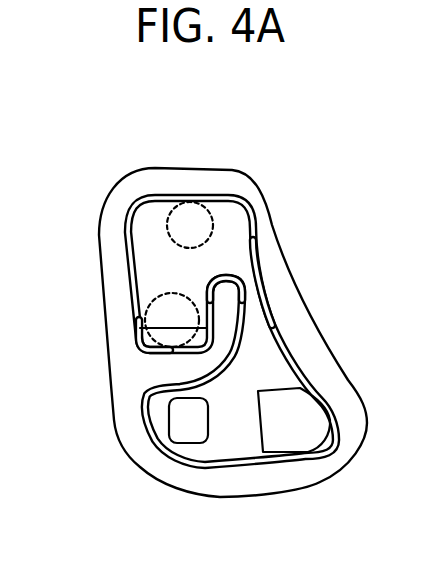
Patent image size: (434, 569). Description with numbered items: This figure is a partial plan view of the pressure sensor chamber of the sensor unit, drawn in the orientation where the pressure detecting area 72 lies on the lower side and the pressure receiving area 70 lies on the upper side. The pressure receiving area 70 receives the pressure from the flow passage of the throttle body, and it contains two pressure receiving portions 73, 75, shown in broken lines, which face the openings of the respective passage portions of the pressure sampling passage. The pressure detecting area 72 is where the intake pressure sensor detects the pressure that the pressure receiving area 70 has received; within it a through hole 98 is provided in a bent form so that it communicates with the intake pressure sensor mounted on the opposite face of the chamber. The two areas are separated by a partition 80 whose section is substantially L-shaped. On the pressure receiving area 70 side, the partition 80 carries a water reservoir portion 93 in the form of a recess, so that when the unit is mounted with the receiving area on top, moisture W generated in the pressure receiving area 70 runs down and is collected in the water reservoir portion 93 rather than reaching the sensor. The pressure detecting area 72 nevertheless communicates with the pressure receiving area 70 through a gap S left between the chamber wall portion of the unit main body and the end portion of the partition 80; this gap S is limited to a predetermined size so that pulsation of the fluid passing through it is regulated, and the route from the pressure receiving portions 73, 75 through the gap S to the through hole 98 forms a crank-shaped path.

The pressure receiving area 70 is at (163, 262).
The pressure detecting area 72 is at (231, 445).
The pressure receiving portion 73 is at (215, 200).
The pressure receiving portion 75 is at (140, 300).
The partition 80 is at (228, 360).
The water reservoir portion 93 is at (200, 314).
The through hole 98 is at (182, 422).
The gap (communication portion) S is at (250, 275).
The moisture W is at (142, 341).